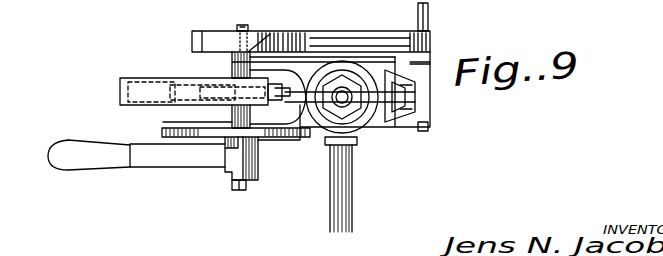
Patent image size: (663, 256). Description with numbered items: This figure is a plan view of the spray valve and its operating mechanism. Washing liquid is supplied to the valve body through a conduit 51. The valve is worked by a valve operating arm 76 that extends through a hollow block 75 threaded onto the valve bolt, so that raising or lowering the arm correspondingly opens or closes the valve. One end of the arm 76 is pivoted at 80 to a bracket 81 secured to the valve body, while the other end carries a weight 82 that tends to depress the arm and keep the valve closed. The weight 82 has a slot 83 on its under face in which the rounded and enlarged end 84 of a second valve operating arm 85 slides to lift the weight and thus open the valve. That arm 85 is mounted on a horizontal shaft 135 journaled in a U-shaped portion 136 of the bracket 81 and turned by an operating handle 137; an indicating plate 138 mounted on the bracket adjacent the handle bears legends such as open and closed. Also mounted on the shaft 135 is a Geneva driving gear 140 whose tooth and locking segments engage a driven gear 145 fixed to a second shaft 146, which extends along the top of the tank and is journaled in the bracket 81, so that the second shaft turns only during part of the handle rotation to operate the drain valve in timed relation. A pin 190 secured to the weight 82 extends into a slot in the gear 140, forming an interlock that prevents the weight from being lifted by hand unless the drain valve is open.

The conduit 51 is at (353, 190).
The hollow block 75 is at (346, 105).
The valve operating arm 76 is at (372, 90).
The pivot 80 is at (424, 131).
The bracket 81 is at (409, 130).
The weight 82 is at (120, 88).
The slot 83 is at (142, 82).
The rounded and enlarged end 84 is at (175, 84).
The valve operating arm 85 is at (210, 86).
The horizontal shaft 135 is at (240, 191).
The U-shaped portion 136 is at (292, 140).
The operating handle 137 is at (63, 143).
The indicating plate 138 is at (162, 131).
The Geneva driving gear 140 is at (217, 35).
The driven gear 145 is at (356, 37).
The second shaft 146 is at (429, 16).
The pin 190 is at (262, 33).